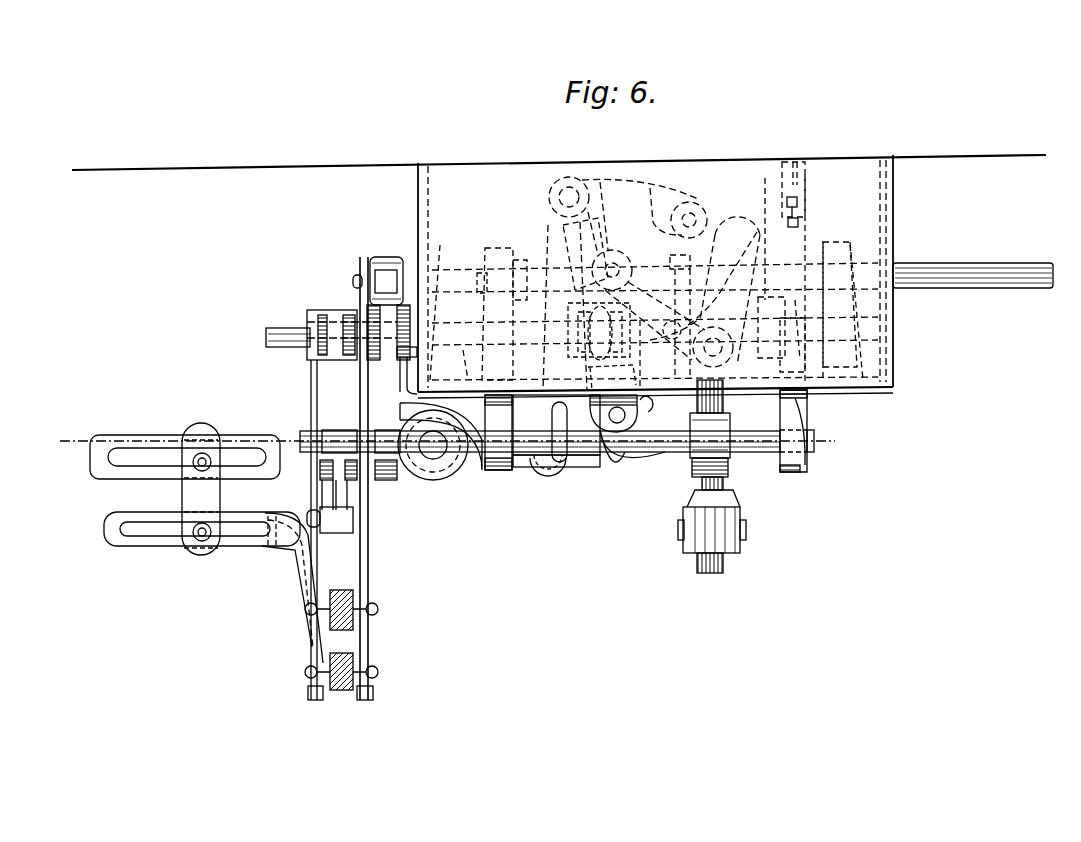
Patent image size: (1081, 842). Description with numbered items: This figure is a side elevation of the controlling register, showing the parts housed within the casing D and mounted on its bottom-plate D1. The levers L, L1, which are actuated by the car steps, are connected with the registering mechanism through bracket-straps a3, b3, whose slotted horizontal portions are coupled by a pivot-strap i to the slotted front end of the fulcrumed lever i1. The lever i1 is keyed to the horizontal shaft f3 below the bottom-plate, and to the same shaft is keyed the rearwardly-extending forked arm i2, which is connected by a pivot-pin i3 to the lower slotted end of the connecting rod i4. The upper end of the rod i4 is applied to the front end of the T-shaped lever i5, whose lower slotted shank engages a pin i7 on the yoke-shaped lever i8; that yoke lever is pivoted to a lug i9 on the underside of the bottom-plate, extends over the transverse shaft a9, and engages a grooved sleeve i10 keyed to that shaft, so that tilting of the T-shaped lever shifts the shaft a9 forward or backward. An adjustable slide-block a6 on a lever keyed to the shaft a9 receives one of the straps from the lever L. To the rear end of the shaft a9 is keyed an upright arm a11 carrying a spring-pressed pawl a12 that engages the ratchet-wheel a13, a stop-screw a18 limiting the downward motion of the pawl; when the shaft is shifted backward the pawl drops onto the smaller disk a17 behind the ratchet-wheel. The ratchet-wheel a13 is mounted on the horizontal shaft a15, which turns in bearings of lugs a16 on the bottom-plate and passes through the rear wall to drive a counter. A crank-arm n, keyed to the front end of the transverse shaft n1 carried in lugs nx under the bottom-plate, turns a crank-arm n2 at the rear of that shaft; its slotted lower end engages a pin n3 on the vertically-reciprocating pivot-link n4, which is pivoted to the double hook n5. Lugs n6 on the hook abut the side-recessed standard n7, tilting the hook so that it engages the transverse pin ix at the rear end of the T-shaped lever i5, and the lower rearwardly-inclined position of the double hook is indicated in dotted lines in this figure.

The casing D is at (428, 214).
The bottom-plate D1 is at (659, 405).
The bracket-strap a3 is at (300, 600).
The adjustable slide-block a6 is at (490, 364).
The transverse shaft a9 is at (270, 326).
The upright arm a11 is at (768, 200).
The pawl a12 is at (795, 172).
The ratchet-wheel a13 is at (795, 360).
The horizontal shaft a15 is at (975, 262).
The lug a16 is at (497, 256).
The disk a17 is at (800, 203).
The stop-screw a18 is at (798, 212).
The bracket-strap b3 is at (262, 545).
The horizontal shaft f3 is at (432, 462).
The pivot-strap i is at (201, 489).
The fulcrumed lever i1 is at (292, 452).
The forked arm i2 is at (530, 466).
The pivot-pin i3 is at (572, 458).
The connecting rod i4 is at (552, 248).
The T-shaped lever i5 is at (654, 195).
The pin i7 is at (668, 330).
The yoke-shaped lever i8 is at (652, 478).
The lug i9 is at (655, 410).
The sleeve i10 is at (592, 346).
The transverse pin ix is at (690, 218).
The lever L is at (355, 672).
The lever L1 is at (355, 605).
The crank-arm n is at (340, 505).
The transverse shaft n1 is at (482, 468).
The crank-arm n2 is at (728, 492).
The pin n3 is at (744, 532).
The pivot-link n4 is at (726, 405).
The double hook n5 is at (738, 246).
The lug n6 is at (700, 325).
The side-recessed standard n7 is at (672, 258).
The lug nx is at (800, 420).